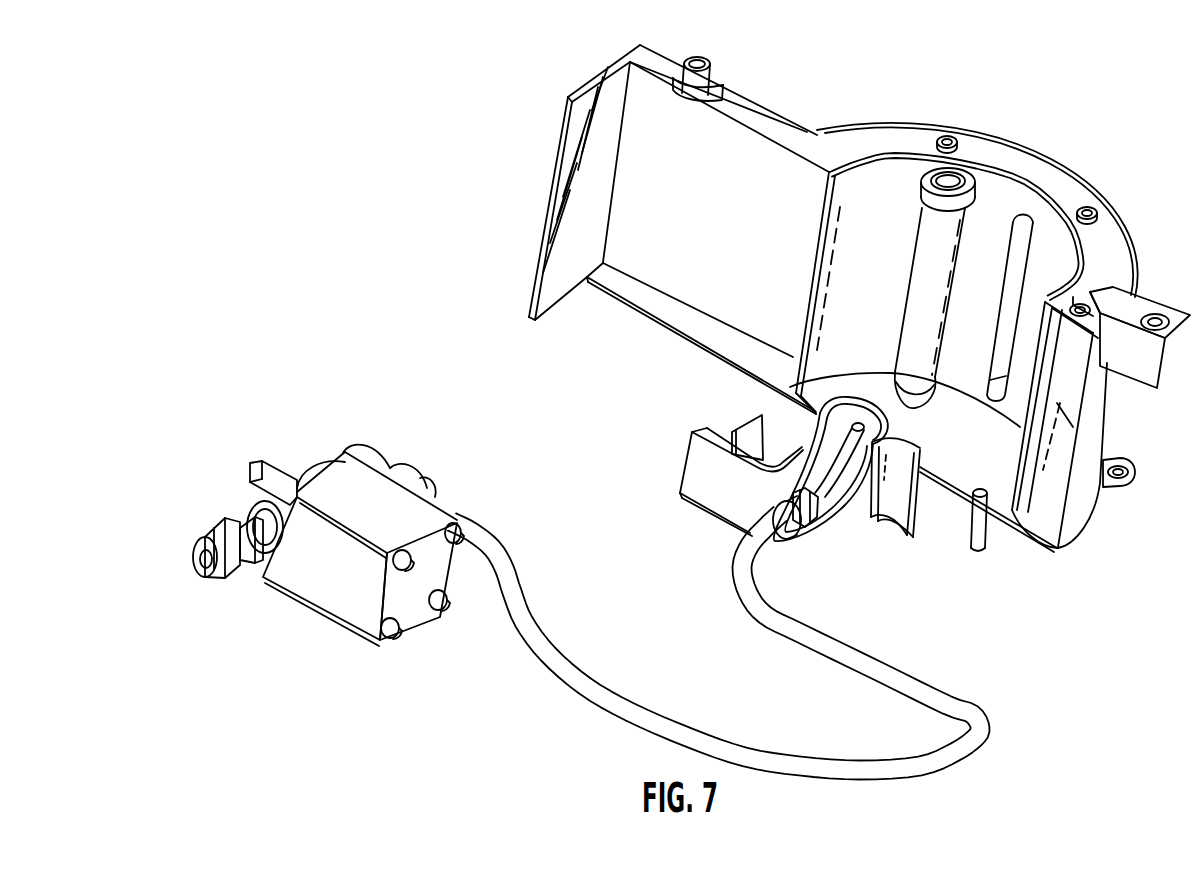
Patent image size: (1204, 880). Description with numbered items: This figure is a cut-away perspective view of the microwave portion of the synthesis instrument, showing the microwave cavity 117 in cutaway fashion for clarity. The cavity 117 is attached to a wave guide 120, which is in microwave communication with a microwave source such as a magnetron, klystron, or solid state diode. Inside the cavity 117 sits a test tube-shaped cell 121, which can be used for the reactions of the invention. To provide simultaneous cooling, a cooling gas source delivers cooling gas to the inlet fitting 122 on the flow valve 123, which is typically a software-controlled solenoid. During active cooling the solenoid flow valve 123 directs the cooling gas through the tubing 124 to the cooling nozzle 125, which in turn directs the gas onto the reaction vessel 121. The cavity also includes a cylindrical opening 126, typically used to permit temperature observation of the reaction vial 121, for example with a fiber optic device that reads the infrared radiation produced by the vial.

The microwave cavity 117 is at (991, 129).
The wave guide 120 is at (703, 228).
The test tube-shaped cell 121 is at (976, 185).
The inlet fitting 122 is at (212, 515).
The flow valve 123 is at (348, 639).
The tubing 124 is at (991, 742).
The cooling nozzle 125 is at (838, 477).
The cylindrical opening 126 is at (926, 453).